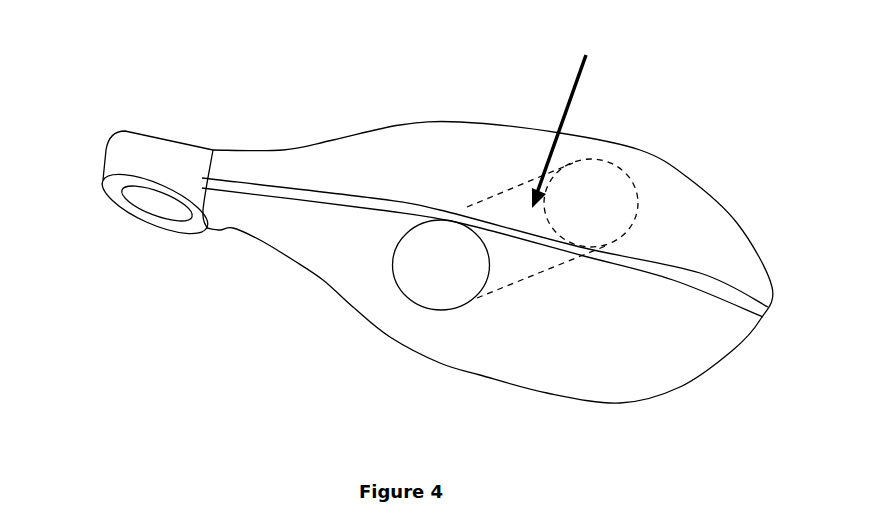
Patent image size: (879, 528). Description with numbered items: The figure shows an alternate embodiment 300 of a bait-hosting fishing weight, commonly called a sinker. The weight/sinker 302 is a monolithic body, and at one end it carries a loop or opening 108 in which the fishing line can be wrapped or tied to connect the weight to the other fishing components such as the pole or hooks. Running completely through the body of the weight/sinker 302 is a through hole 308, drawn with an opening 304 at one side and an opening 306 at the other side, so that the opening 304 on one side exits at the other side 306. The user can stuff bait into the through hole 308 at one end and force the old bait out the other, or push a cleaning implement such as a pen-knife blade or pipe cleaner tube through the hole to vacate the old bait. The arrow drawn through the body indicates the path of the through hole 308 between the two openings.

The alternate embodiment 300 is at (318, 110).
The weight/sinker 302 is at (343, 170).
The opening 304 is at (433, 285).
The opening 306 is at (592, 185).
The through hole 308 is at (566, 118).
The loop or opening 108 is at (143, 200).